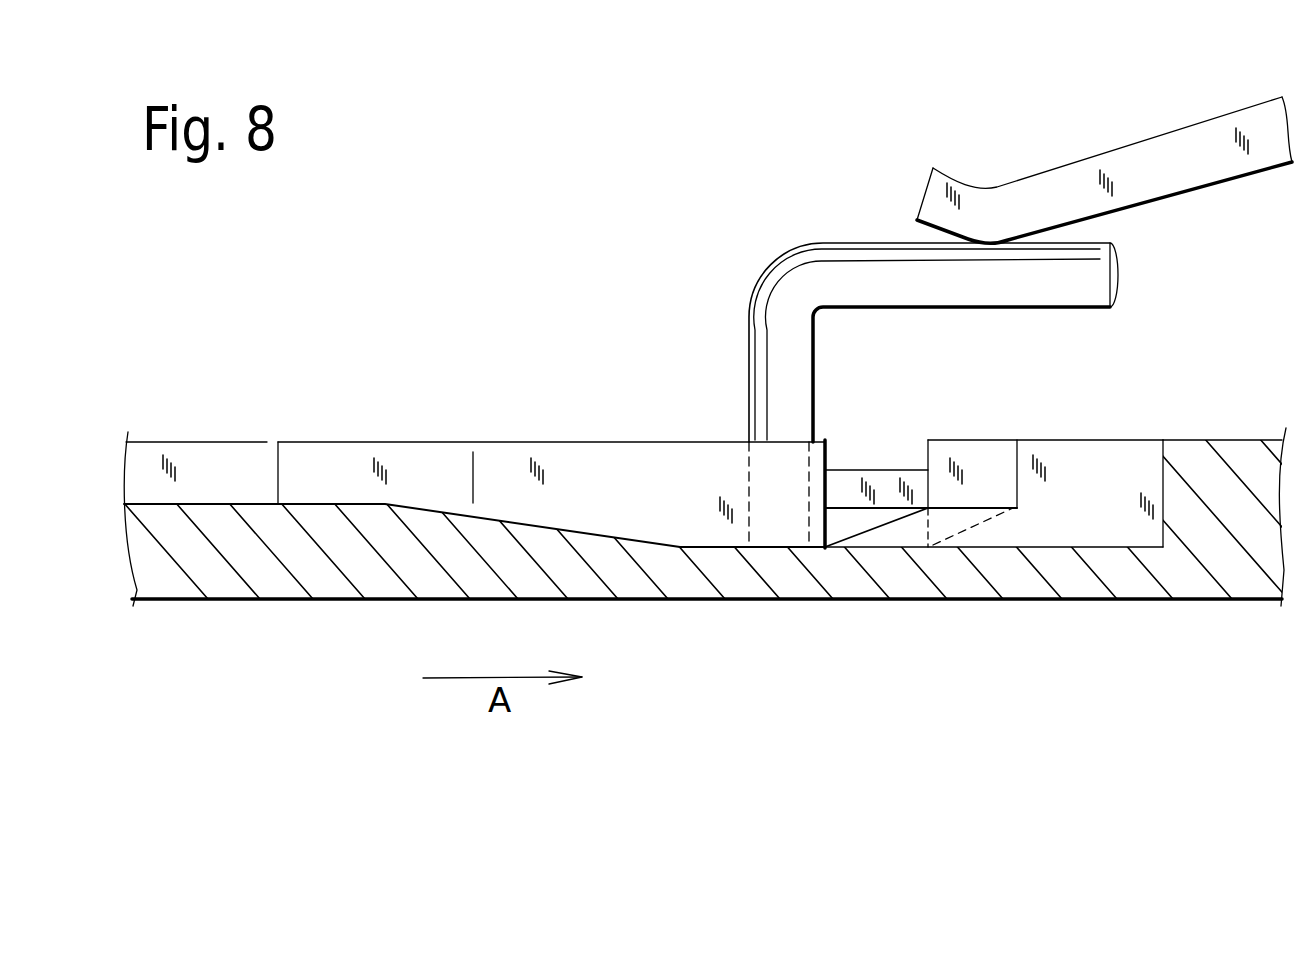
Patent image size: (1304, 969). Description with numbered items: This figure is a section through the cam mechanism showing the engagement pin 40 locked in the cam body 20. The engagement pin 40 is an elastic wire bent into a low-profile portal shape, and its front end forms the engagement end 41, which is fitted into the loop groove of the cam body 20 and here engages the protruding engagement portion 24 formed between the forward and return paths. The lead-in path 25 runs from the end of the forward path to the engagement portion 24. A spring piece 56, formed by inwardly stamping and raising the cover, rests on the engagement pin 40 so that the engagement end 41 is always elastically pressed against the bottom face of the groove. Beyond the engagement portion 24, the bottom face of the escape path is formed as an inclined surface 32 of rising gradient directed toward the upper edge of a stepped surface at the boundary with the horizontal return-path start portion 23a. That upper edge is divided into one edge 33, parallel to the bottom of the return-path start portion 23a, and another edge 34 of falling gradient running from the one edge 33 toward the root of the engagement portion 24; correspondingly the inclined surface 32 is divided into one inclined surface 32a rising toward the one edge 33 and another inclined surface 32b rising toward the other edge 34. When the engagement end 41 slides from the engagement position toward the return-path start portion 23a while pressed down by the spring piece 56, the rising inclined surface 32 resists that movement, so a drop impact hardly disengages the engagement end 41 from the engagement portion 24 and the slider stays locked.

The cam body 20 is at (284, 598).
The engagement portion 24 is at (632, 442).
The engagement pin 40 is at (790, 255).
The engagement end 41 is at (805, 533).
The spring piece 56 is at (1172, 142).
The inclined surface 32 is at (923, 635).
The one inclined surface 32a is at (948, 527).
The other inclined surface 32b is at (888, 535).
The other edge 34 is at (851, 522).
The lead-in path 25 is at (882, 505).
The one edge 33 is at (967, 503).
The return-path start portion 23a is at (1093, 548).